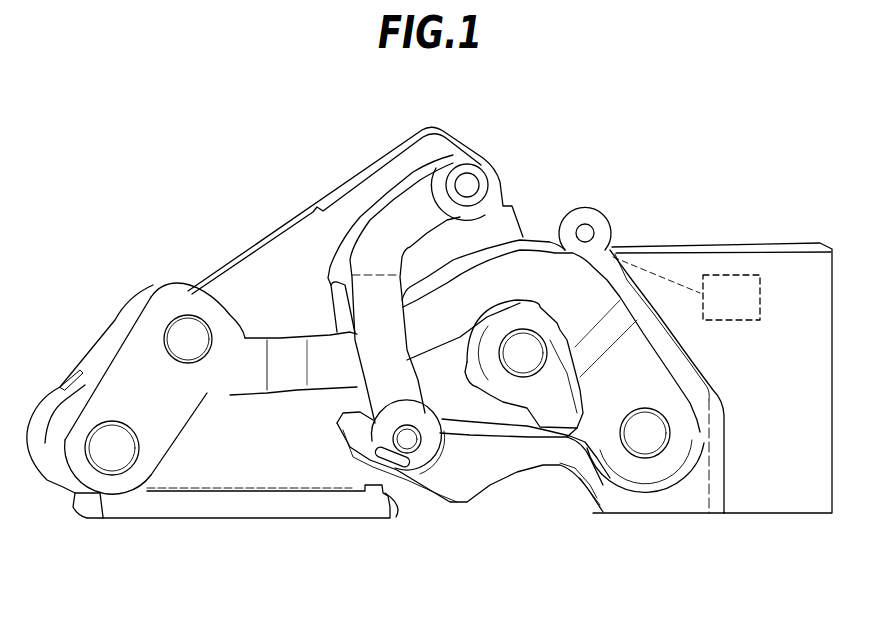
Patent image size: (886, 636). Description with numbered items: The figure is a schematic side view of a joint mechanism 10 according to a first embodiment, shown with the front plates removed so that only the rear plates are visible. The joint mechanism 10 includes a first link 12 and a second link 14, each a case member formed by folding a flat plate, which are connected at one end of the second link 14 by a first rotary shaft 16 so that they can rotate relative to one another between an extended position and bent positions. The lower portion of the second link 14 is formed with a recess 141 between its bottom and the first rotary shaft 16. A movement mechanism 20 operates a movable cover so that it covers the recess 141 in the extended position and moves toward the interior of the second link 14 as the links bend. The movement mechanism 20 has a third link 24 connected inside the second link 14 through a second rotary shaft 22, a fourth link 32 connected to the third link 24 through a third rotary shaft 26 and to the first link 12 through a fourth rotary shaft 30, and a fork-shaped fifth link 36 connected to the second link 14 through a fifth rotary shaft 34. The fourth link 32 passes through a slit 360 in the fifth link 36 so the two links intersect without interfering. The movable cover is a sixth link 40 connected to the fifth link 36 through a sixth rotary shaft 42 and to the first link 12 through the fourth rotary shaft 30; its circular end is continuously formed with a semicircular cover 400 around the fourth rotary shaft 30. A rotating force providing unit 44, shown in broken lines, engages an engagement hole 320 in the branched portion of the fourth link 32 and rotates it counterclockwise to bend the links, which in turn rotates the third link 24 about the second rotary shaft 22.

The joint mechanism 10 is at (642, 157).
The first link 12 is at (790, 521).
The second link 14 is at (287, 217).
The recess 141 is at (397, 495).
The first rotary shaft 16 is at (525, 356).
The movement mechanism 20 is at (559, 207).
The second rotary shaft 22 is at (114, 451).
The third link 24 is at (97, 360).
The third rotary shaft 26 is at (190, 340).
The fourth rotary shaft 30 is at (647, 435).
The fourth link 32 is at (283, 360).
The engagement hole 320 is at (587, 232).
The fifth rotary shaft 34 is at (470, 184).
The fifth link 36 is at (380, 200).
The slit 360 is at (340, 333).
The sixth link 40 is at (463, 503).
The semicircular cover 400 is at (612, 530).
The sixth rotary shaft 42 is at (407, 442).
The rotating force providing unit 44 is at (686, 288).